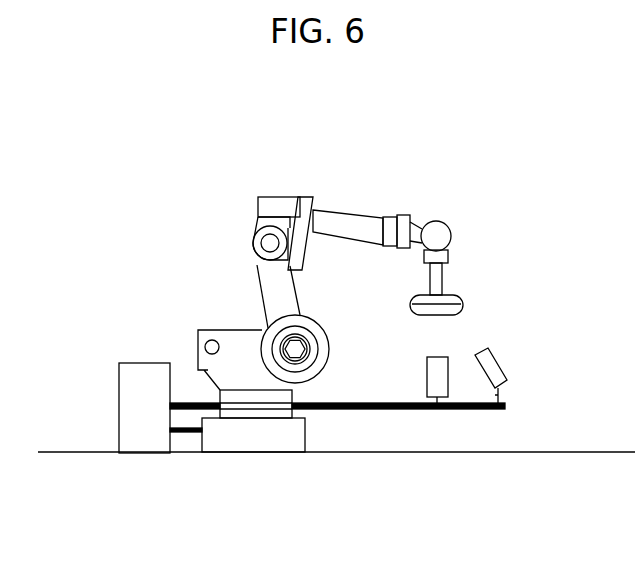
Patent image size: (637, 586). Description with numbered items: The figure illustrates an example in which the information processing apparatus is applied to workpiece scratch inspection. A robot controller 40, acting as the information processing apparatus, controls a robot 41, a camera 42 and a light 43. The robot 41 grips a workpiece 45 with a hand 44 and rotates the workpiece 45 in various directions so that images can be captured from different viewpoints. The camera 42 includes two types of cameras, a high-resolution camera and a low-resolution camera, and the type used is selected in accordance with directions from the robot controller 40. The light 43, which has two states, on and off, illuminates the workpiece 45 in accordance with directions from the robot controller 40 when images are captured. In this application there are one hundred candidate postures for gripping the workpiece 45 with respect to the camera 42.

The robot controller 40 is at (138, 362).
The robot 41 is at (290, 198).
The camera 42 is at (427, 380).
The light 43 is at (478, 373).
The hand 44 is at (447, 278).
The workpiece 45 is at (463, 303).